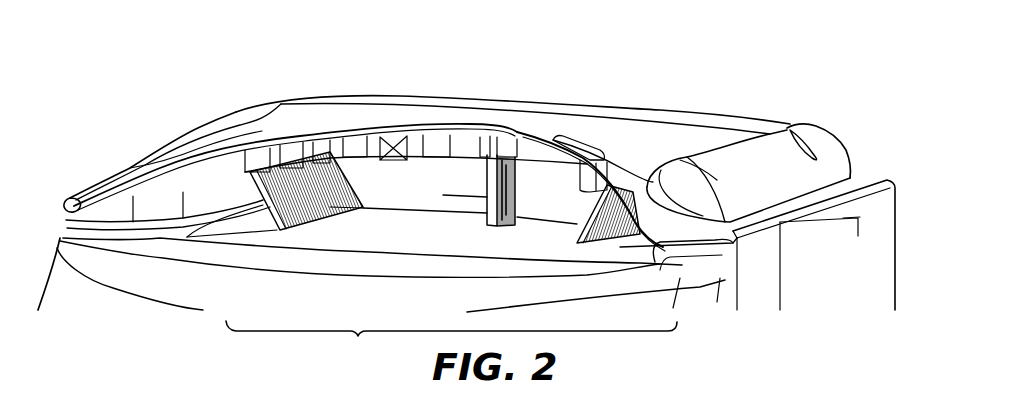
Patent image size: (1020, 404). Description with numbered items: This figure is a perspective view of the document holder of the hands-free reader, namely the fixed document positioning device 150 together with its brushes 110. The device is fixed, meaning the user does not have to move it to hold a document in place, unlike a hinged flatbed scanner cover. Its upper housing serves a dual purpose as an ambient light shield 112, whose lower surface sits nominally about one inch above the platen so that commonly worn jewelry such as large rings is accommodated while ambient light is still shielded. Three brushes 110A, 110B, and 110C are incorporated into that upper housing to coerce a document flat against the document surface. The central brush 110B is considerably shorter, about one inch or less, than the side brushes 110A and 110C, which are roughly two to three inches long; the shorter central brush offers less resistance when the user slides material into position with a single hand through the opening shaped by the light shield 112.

The fixed document positioning device 150 is at (741, 46).
The light shield 112 is at (234, 107).
The brushes 110 is at (451, 341).
The side brush 110A is at (278, 230).
The central brush 110B is at (507, 225).
The side brush 110C is at (645, 247).